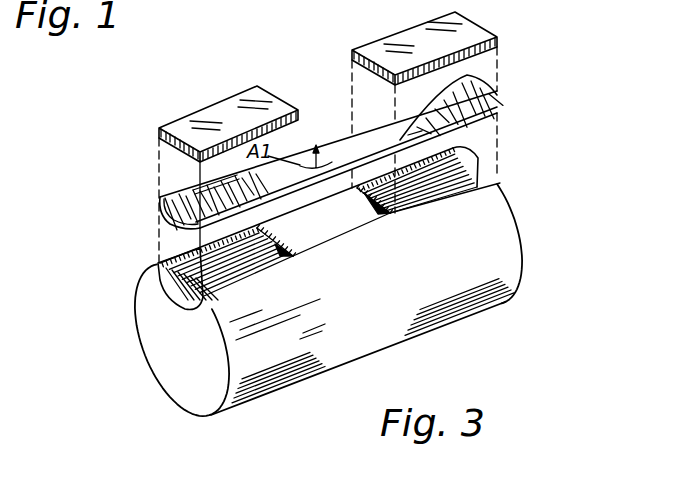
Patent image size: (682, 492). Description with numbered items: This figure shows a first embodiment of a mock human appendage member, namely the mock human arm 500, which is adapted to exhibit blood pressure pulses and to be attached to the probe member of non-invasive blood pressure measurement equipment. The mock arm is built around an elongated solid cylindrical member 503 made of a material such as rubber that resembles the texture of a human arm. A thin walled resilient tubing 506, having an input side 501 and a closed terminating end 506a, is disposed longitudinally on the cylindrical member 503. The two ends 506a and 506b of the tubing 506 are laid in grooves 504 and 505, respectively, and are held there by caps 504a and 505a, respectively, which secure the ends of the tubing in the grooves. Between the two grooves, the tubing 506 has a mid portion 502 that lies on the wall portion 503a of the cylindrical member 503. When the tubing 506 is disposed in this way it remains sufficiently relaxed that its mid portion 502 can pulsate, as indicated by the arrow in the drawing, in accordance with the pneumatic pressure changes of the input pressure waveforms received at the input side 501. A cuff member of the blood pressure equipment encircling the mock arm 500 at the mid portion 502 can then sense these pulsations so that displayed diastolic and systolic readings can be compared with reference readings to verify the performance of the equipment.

The mock human arm 500 is at (393, 312).
The input side 501 is at (472, 84).
The mid portion 502 is at (370, 125).
The elongated solid cylindrical member 503 is at (447, 311).
The wall portion 503a is at (333, 222).
The groove 504 is at (158, 278).
The cap 504a is at (207, 103).
The groove 505 is at (465, 164).
The cap 505a is at (410, 27).
The thin walled resilient tubing 506 is at (318, 151).
The closed terminating end 506a is at (173, 194).
The end of tubing 506b is at (488, 101).